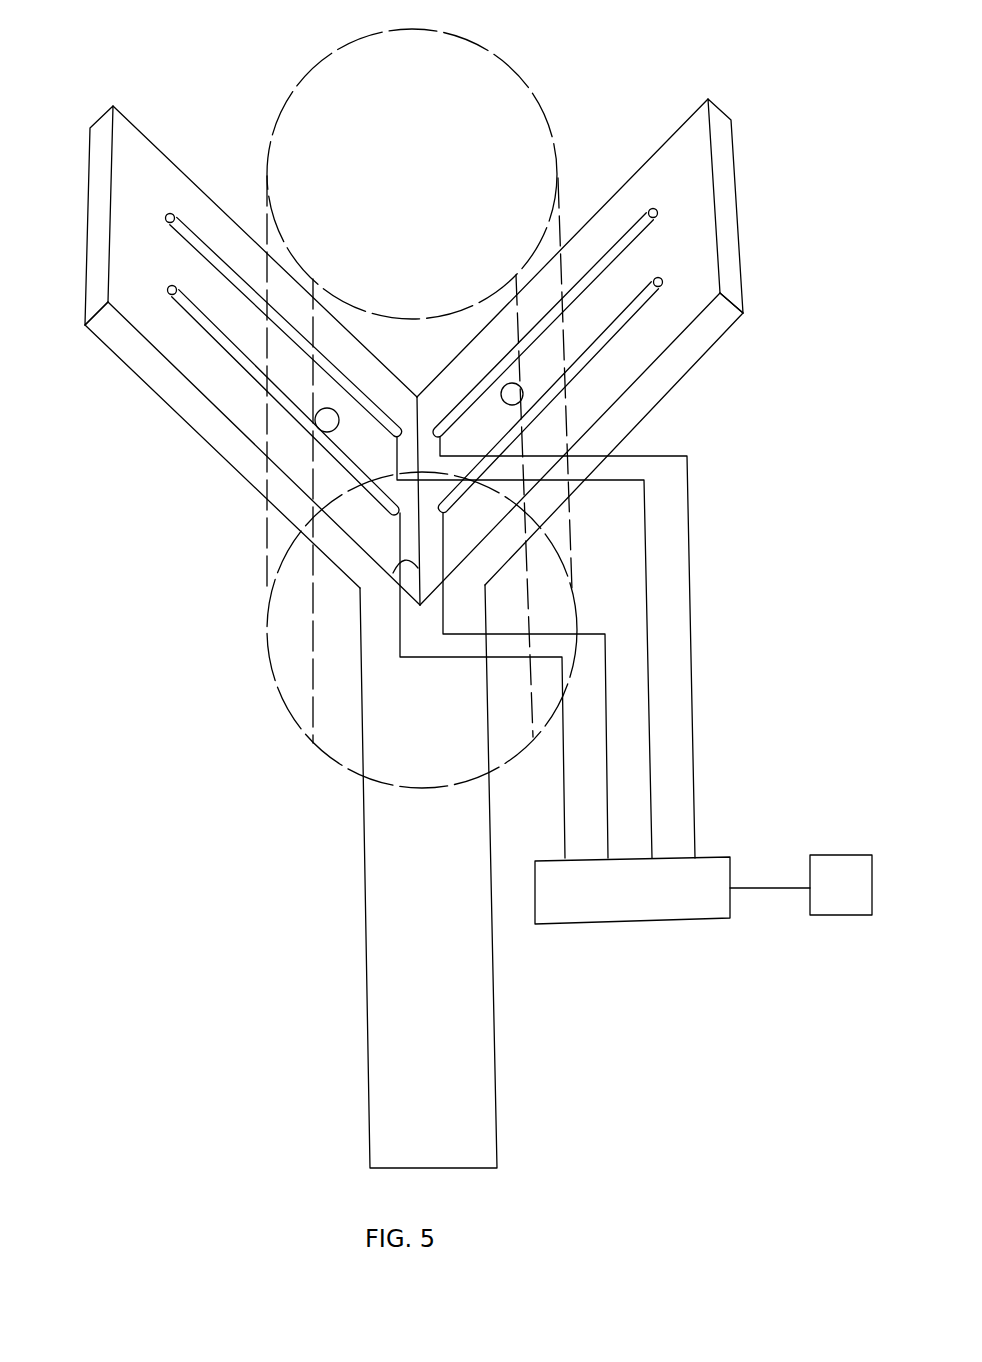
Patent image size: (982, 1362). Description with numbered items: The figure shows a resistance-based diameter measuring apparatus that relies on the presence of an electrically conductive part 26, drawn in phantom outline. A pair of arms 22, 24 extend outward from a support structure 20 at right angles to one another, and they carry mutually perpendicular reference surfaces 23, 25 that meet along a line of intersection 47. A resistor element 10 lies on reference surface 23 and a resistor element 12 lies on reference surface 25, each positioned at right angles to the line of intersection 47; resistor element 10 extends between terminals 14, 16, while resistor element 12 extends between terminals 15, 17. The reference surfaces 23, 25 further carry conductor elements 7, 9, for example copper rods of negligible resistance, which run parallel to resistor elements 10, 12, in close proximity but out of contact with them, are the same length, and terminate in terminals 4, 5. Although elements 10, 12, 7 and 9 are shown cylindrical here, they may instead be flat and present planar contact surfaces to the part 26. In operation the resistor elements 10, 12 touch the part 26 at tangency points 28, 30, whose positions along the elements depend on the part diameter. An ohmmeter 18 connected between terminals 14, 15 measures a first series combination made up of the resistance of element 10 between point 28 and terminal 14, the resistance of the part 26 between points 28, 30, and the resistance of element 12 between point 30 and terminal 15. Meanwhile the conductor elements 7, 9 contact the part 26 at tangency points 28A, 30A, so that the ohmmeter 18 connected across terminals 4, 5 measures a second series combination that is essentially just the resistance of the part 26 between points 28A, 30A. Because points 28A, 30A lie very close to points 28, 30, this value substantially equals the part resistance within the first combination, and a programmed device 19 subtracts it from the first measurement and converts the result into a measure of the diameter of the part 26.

The terminal 4 is at (394, 519).
The terminal 5 is at (445, 518).
The conductor element 7 is at (214, 336).
The conductor element 9 is at (615, 334).
The resistor element 10 is at (200, 237).
The resistor element 12 is at (625, 235).
The terminal 14 is at (381, 392).
The terminal 15 is at (447, 397).
The terminal 16 is at (167, 214).
The terminal 17 is at (657, 209).
The ohmmeter 18 is at (712, 858).
The programmed device 19 is at (821, 853).
The support structure 20 is at (356, 963).
The arm 22 is at (100, 167).
The reference surface 23 is at (122, 280).
The arm 24 is at (723, 150).
The reference surface 25 is at (705, 272).
The part 26 is at (580, 574).
The tangency point 28 is at (318, 342).
The tangency point 28A is at (312, 428).
The tangency point 30 is at (512, 342).
The tangency point 30A is at (520, 383).
The line of intersection 47 is at (393, 572).